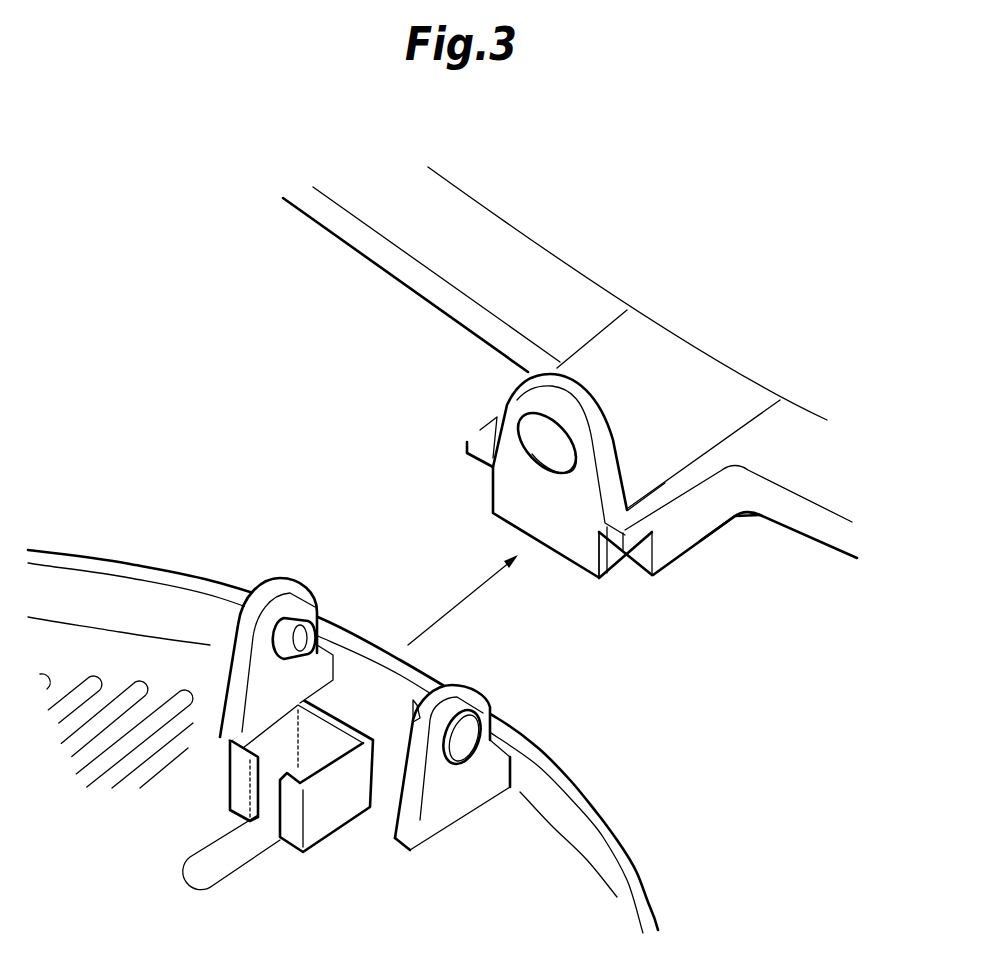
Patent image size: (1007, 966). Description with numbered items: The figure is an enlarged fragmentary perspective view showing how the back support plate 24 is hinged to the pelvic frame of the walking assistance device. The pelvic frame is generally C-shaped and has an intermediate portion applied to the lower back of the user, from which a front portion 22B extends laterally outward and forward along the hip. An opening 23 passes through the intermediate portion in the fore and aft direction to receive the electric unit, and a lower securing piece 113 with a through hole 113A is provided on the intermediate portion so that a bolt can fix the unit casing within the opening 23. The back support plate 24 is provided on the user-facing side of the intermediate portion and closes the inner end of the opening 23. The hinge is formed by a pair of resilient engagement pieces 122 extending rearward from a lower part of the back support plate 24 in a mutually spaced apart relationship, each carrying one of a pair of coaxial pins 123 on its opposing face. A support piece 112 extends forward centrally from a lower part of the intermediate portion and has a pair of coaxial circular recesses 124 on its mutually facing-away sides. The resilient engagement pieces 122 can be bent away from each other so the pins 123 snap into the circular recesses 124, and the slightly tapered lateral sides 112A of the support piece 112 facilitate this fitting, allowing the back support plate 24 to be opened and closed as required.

The opening 23 is at (492, 247).
The front portion 22B is at (820, 530).
The support piece 112 is at (694, 537).
The lateral sides 112A is at (621, 546).
The lower securing piece 113 is at (547, 465).
The through hole 113A is at (560, 457).
The resilient engagement pieces 122 is at (265, 588).
The pins 123 is at (417, 705).
The circular recesses 124 is at (625, 548).
The back support plate 24 is at (621, 843).